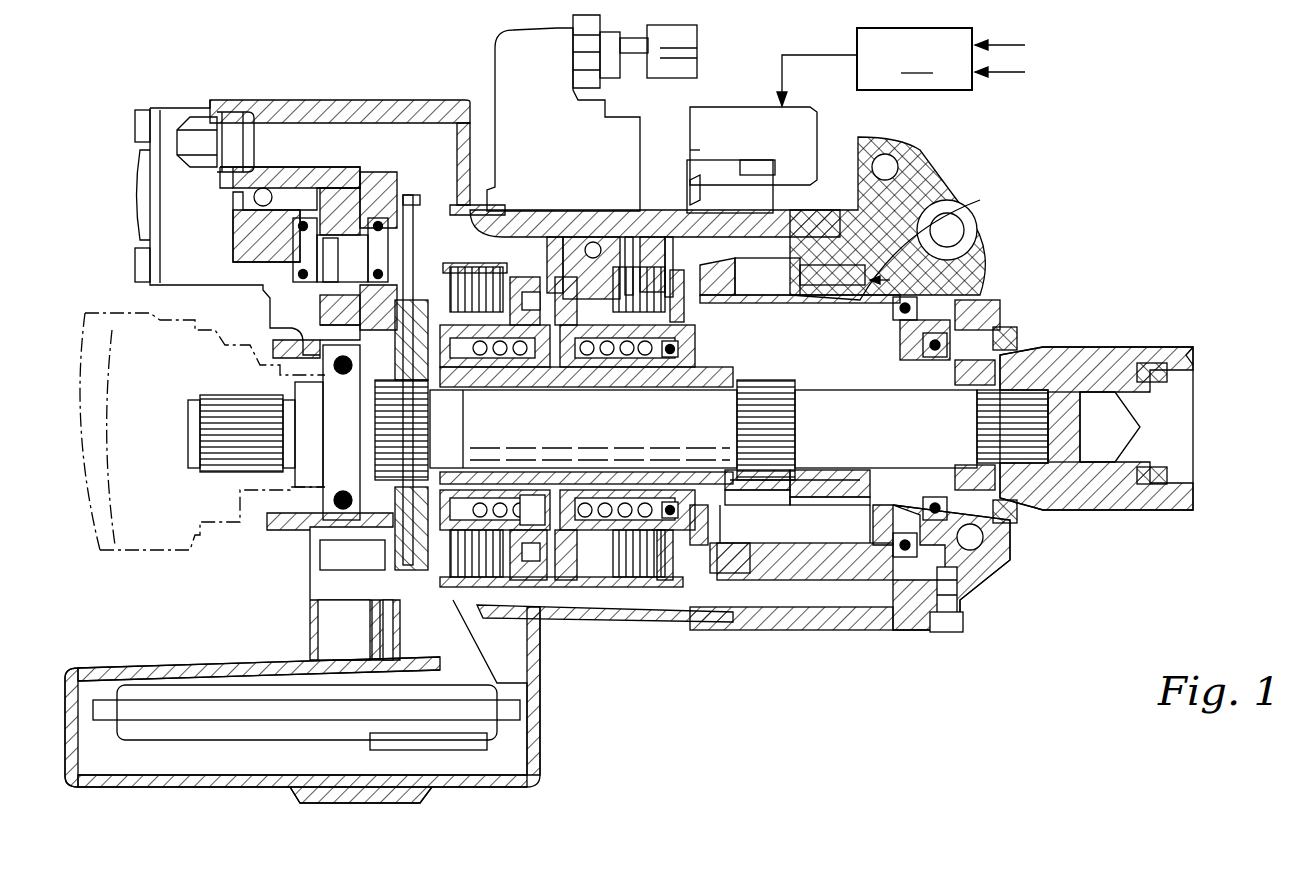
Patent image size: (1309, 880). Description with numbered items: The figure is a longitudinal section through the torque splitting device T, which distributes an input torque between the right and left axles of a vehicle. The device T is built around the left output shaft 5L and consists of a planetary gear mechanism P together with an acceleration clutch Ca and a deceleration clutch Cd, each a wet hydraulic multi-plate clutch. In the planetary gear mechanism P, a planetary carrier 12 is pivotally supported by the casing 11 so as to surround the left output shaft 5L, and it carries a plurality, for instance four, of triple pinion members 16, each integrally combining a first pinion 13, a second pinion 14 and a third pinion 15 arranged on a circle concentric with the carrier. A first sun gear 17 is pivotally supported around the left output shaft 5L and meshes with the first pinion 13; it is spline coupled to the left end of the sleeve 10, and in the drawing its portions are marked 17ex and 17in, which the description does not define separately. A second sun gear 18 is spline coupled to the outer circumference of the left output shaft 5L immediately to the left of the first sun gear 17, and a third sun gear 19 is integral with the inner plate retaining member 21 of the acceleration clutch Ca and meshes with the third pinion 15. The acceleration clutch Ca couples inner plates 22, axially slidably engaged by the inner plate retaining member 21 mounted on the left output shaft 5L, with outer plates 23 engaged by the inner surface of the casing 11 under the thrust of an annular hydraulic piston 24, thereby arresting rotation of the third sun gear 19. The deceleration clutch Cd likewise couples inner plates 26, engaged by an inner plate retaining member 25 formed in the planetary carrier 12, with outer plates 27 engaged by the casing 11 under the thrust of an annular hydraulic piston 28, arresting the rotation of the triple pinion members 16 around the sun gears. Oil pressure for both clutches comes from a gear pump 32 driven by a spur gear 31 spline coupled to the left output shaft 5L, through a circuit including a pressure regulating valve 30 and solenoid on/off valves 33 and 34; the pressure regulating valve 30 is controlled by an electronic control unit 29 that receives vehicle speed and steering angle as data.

The torque splitting device T is at (452, 100).
The gear pump 32 is at (348, 200).
The spur gear 31 is at (420, 298).
The left output shaft 5L is at (1045, 455).
The annular hydraulic piston 28 is at (590, 285).
The outer plates 27 is at (629, 290).
The inner plates 26 is at (668, 300).
The inner plate retaining member 25 is at (710, 300).
The pressure regulating valve 30 is at (800, 115).
The electronic control unit 29 is at (926, 67).
The triple pinion members 16 is at (1010, 115).
The third pinion 15 is at (870, 150).
The second pinion 14 is at (900, 170).
The first pinion 13 is at (917, 205).
The planetary gear mechanism P is at (895, 280).
The solenoid on/off valve 34 is at (880, 350).
The solenoid on/off valve 33 is at (960, 375).
The sleeve 10 is at (1095, 360).
The acceleration clutch Ca is at (465, 603).
The outer plates 23 is at (480, 560).
The annular hydraulic piston 24 is at (540, 565).
The deceleration clutch Cd is at (643, 603).
The inner plates 22 is at (345, 590).
The inner plate retaining member 21 is at (325, 553).
The third sun gear 19 is at (713, 575).
The second sun gear 18 is at (762, 505).
The external gear 17ex is at (812, 505).
The internal gear 17in is at (893, 470).
The first sun gear 17 is at (920, 730).
The planetary carrier 12 is at (863, 500).
The casing 11 is at (905, 622).